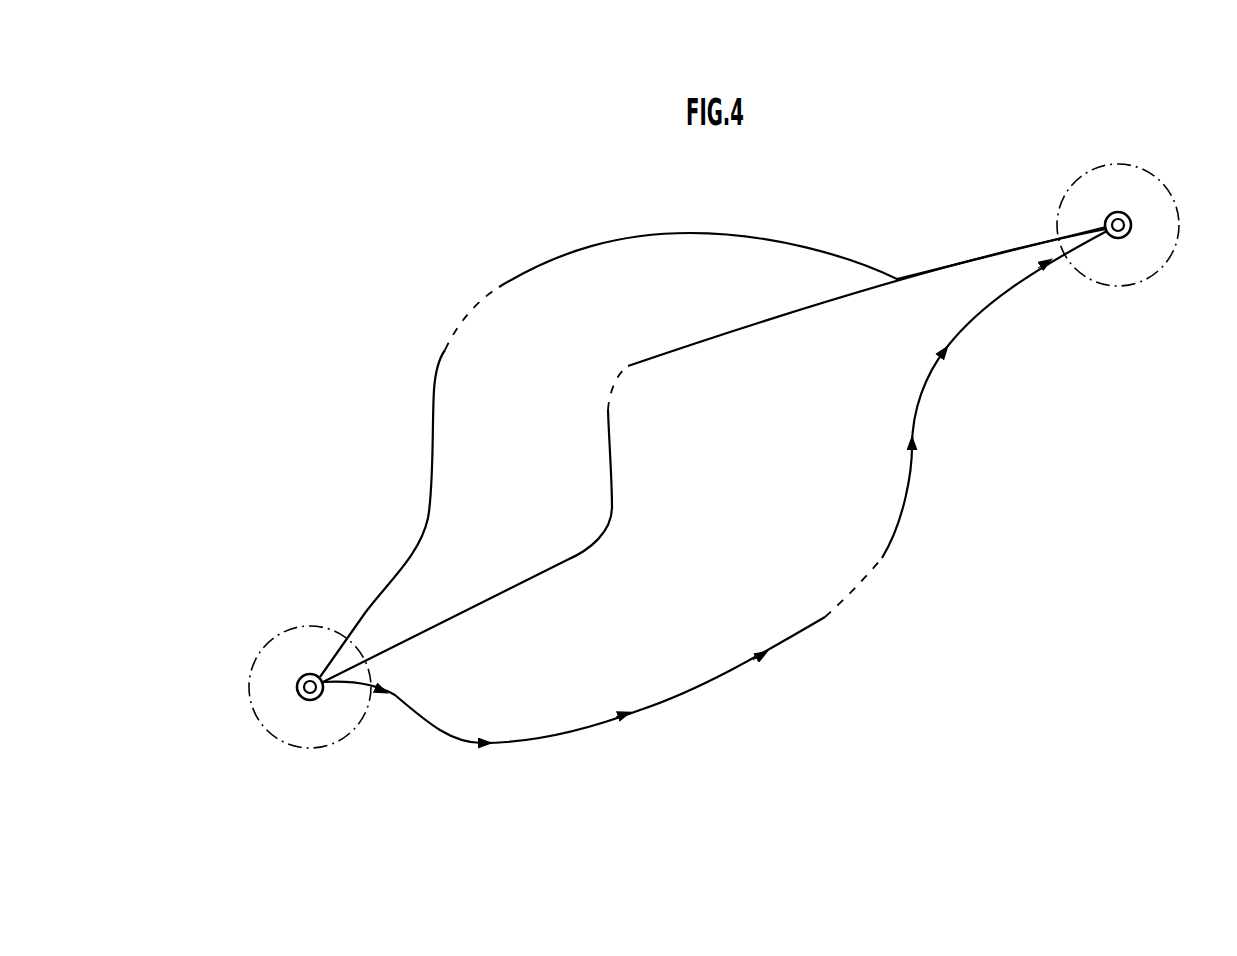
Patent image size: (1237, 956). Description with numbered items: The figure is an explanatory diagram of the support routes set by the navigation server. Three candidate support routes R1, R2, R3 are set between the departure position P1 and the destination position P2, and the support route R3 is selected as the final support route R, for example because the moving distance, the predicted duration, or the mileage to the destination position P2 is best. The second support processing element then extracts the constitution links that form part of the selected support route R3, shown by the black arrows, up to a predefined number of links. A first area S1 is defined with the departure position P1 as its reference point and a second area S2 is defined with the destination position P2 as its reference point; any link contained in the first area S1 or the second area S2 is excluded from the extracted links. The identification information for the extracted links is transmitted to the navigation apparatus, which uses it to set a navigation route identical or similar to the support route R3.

The departure position P1 is at (299, 670).
The destination position P2 is at (1109, 207).
The first area S1 is at (270, 720).
The second area S2 is at (1155, 256).
The support route R1 is at (531, 255).
The support route R2 is at (649, 347).
The support route R3 is at (891, 531).